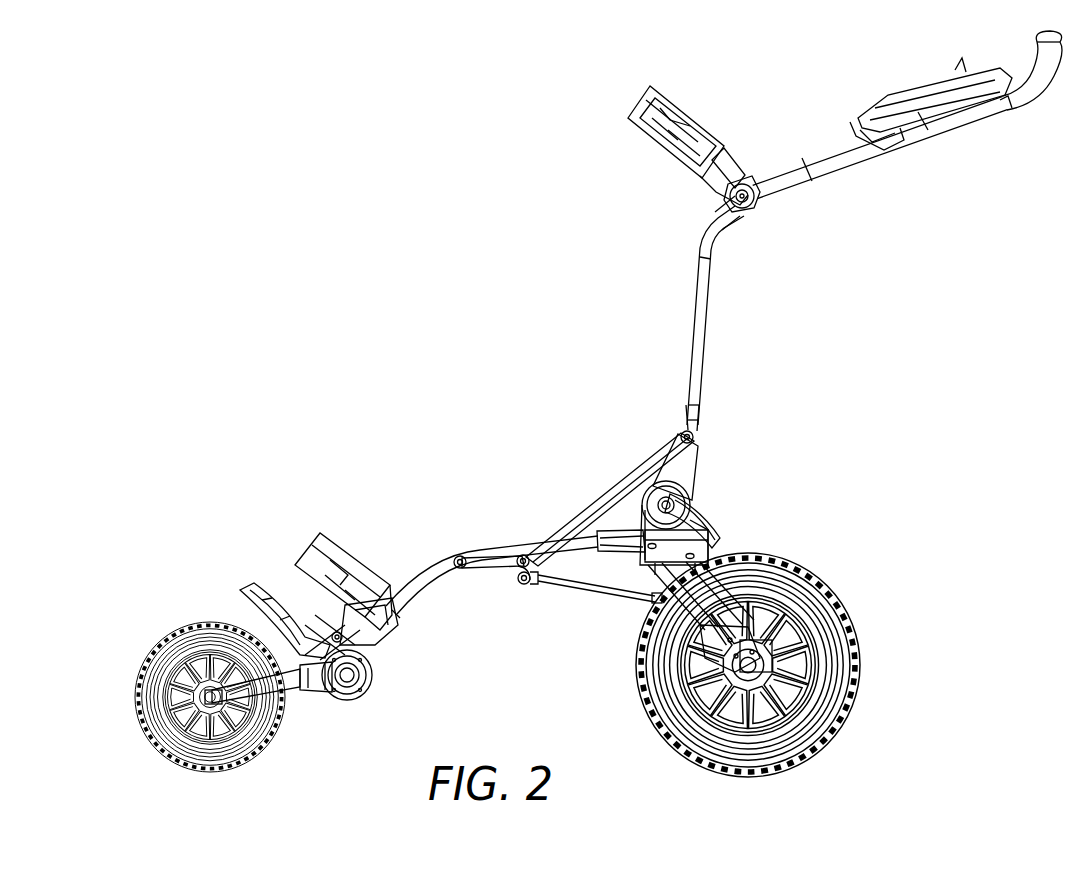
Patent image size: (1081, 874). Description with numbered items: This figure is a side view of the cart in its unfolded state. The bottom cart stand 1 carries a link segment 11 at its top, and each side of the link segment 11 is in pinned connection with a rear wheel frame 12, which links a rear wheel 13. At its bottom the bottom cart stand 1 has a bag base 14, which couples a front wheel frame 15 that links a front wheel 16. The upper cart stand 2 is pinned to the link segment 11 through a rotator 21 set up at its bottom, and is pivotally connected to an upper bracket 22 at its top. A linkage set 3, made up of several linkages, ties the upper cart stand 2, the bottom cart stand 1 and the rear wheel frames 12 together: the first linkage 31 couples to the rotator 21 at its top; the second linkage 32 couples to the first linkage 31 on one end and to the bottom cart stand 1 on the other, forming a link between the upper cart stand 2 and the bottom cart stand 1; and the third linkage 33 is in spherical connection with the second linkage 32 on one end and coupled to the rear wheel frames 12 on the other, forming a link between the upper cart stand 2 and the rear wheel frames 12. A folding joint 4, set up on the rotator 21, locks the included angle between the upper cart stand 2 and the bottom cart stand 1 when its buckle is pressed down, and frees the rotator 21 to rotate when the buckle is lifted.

The bottom cart stand 1 is at (415, 560).
The upper cart stand 2 is at (712, 308).
The linkage set 3 is at (517, 585).
The folding joint 4 is at (705, 492).
The link segment 11 is at (663, 553).
The rear wheel frame 12 is at (733, 565).
The rear wheel 13 is at (830, 600).
The bag base 14 is at (360, 636).
The front wheel frame 15 is at (298, 690).
The front wheel 16 is at (282, 736).
The rotator 21 is at (688, 462).
The upper bracket 22 is at (745, 210).
The first linkage 31 is at (590, 500).
The second linkage 32 is at (497, 568).
The third linkage 33 is at (592, 588).